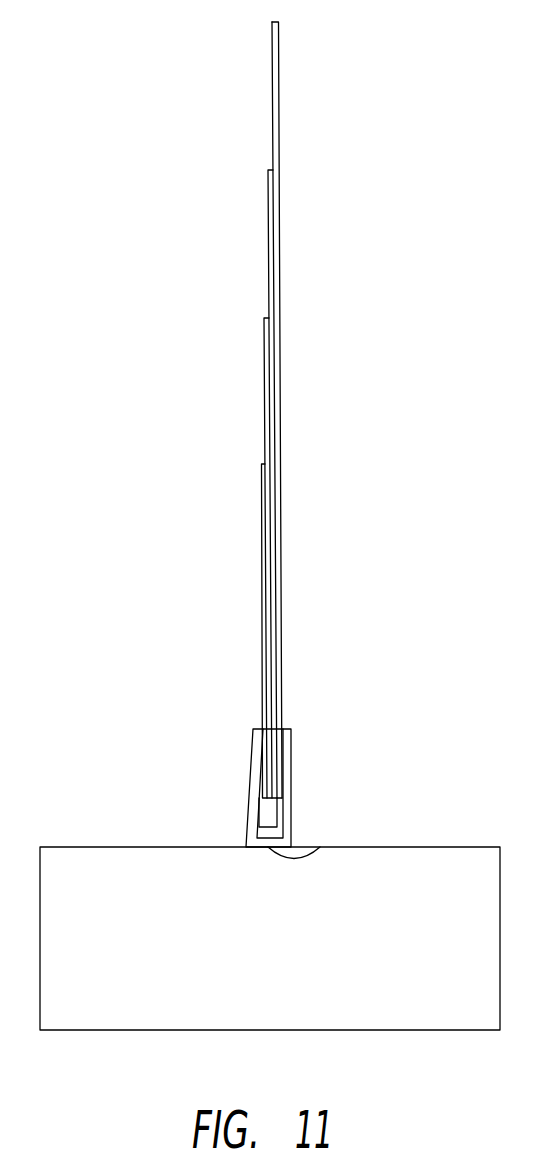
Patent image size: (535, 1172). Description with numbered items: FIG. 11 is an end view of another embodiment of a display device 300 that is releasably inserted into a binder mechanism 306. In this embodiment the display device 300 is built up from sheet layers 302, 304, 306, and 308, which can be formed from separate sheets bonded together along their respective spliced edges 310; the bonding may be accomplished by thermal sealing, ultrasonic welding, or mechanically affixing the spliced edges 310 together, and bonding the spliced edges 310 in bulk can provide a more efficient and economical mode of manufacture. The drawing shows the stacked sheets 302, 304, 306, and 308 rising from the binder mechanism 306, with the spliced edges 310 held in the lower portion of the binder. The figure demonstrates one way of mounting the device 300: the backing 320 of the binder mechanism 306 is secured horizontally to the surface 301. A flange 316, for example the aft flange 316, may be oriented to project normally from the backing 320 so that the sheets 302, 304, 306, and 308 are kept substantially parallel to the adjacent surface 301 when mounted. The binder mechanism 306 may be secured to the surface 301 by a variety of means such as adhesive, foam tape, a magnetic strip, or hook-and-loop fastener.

The display device 300 is at (345, 60).
The surface 301 is at (122, 845).
The sheet layer 302 is at (262, 521).
The sheet layer 304 is at (264, 360).
The binder mechanism 306 is at (268, 221).
The sheet layer 308 is at (279, 110).
The spliced edges 310 is at (283, 811).
The flange 316 is at (291, 757).
The backing 320 is at (320, 847).